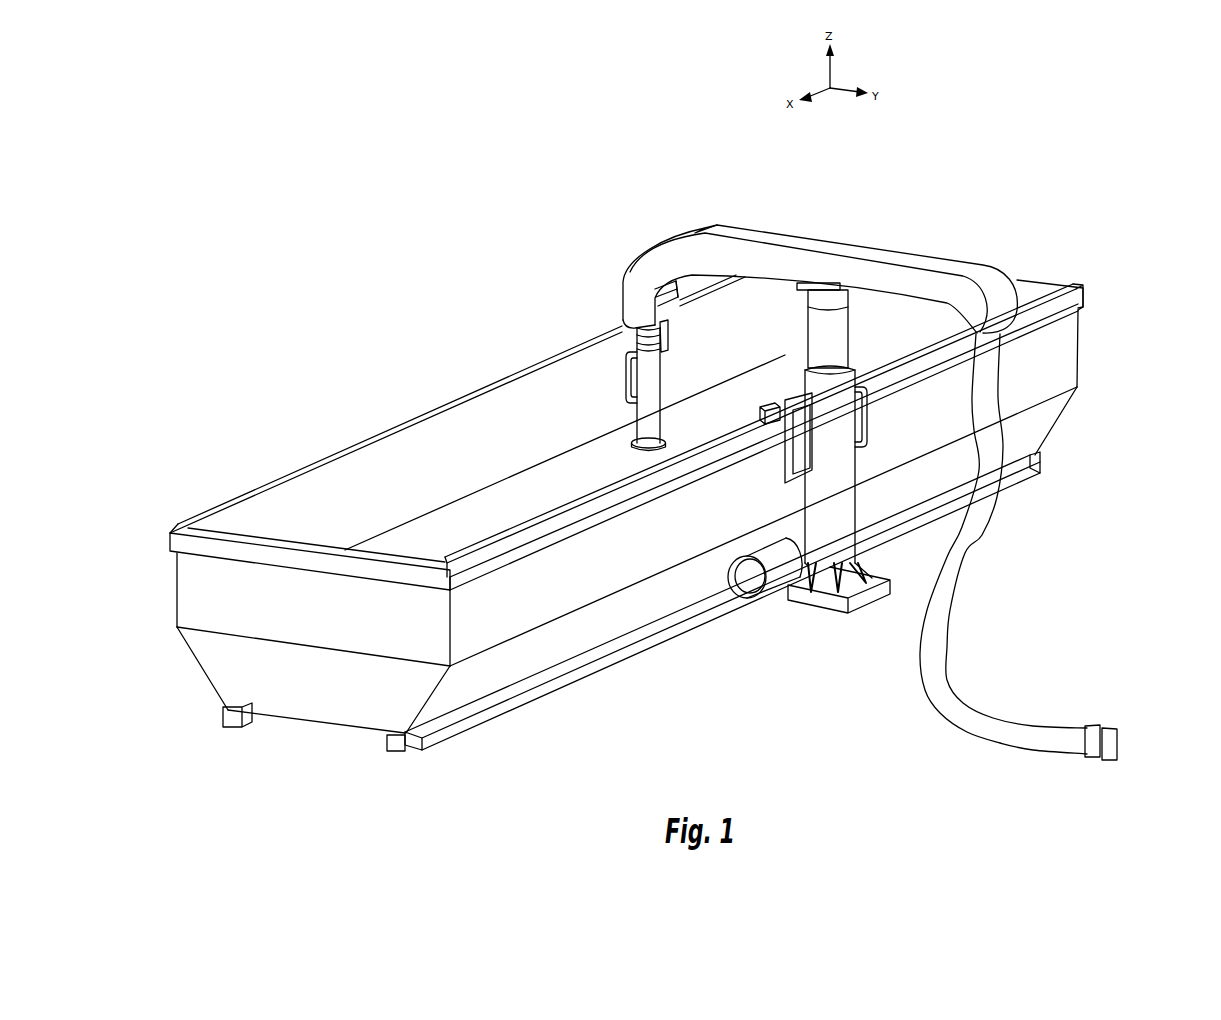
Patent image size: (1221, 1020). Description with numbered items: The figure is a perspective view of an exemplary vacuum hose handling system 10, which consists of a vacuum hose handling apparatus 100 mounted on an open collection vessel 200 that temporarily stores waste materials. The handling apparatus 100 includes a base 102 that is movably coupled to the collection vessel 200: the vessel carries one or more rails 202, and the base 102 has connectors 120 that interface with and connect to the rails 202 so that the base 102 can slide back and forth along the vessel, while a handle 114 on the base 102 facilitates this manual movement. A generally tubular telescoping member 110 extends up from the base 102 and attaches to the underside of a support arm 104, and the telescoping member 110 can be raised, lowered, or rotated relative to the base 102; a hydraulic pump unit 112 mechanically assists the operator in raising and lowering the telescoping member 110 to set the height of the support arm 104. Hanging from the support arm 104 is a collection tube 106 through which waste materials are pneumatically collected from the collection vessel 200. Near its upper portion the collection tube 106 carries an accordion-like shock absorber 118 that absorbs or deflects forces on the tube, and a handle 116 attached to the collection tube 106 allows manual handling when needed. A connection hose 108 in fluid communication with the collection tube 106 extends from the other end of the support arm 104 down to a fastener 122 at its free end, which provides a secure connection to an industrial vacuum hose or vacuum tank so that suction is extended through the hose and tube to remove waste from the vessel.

The vacuum hose handling system 10 is at (280, 126).
The vacuum hose handling apparatus 100 is at (992, 180).
The base 102 is at (843, 523).
The support arm 104 is at (747, 235).
The collection tube 106 is at (637, 417).
The connection hose 108 is at (1037, 723).
The telescoping member 110 is at (837, 328).
The hydraulic pump unit 112 is at (775, 578).
The handle 114 is at (867, 420).
The handle 116 is at (627, 373).
The shock absorber 118 is at (663, 340).
The connectors 120 is at (620, 423).
The fastener 122 is at (1120, 733).
The open collection vessel 200 is at (318, 440).
The rails 202 is at (595, 530).